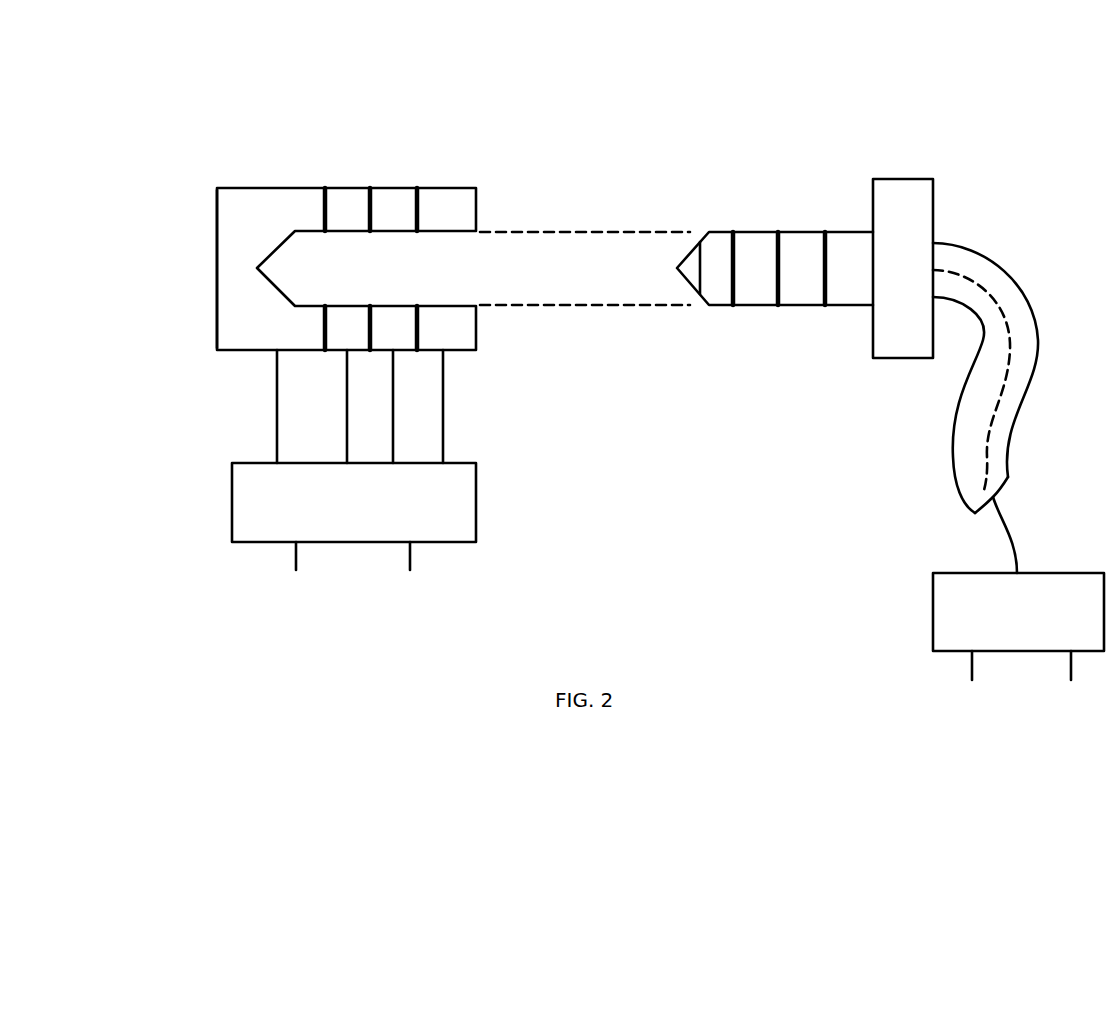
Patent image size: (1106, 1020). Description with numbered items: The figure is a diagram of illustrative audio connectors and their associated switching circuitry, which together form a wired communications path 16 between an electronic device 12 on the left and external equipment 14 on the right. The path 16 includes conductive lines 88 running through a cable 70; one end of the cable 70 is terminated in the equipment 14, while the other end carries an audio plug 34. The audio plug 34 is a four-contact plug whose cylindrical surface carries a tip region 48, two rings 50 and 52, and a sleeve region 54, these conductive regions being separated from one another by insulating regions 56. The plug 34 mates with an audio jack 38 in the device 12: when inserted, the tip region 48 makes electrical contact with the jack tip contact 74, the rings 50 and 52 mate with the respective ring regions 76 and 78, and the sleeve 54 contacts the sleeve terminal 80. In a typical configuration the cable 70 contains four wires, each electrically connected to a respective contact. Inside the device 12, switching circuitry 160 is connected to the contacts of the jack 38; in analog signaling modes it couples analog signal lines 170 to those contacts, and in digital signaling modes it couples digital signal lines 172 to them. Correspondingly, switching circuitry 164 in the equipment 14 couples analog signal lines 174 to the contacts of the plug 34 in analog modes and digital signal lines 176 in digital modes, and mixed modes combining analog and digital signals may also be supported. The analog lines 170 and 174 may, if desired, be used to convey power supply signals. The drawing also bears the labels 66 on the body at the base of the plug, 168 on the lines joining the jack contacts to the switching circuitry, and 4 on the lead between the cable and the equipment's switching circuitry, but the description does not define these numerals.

The path 16 is at (1090, 65).
The electronic device 12 is at (180, 178).
The equipment 14 is at (852, 528).
The audio jack 38 is at (508, 145).
The audio plug 34 is at (984, 143).
The jack tip contact 74 is at (277, 195).
The ring region 76 is at (351, 195).
The ring region 78 is at (393, 195).
The sleeve terminal 80 is at (451, 195).
The insulating regions 56 is at (325, 231).
The tip region 48 is at (717, 236).
The ring 50 is at (762, 236).
The ring 52 is at (807, 236).
The sleeve region 54 is at (852, 236).
The plug connector housing 66 is at (923, 199).
The conductive lines 88 is at (1008, 377).
The cable 70 is at (963, 430).
The wire 4 is at (1005, 552).
The interconnect lines 168 is at (347, 430).
The switching circuitry 160 is at (476, 500).
The analog signal lines 170 is at (296, 557).
The digital signal lines 172 is at (410, 557).
The switching circuitry 164 is at (933, 632).
The analog signal lines 174 is at (972, 665).
The digital signal lines 176 is at (1071, 665).